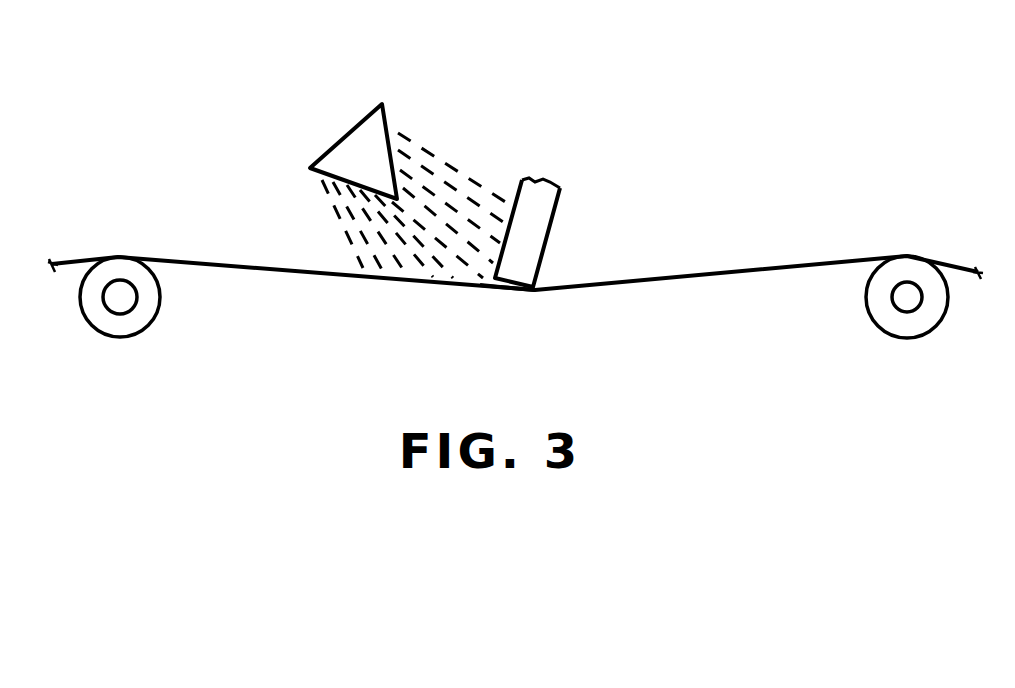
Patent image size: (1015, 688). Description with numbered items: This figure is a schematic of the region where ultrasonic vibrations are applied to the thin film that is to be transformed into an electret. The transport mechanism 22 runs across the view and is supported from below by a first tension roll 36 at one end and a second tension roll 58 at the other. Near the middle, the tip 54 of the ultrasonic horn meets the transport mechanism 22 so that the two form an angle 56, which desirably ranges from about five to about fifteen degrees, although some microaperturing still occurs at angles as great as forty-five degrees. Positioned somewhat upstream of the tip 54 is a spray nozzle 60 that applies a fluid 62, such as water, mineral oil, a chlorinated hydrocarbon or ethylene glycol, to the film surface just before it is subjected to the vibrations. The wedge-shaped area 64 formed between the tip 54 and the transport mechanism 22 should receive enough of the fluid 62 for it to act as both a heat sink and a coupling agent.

The transport mechanism 22 is at (168, 256).
The first tension roll 36 is at (152, 308).
The second tension roll 58 is at (947, 297).
The spray nozzle 60 is at (387, 112).
The fluid 62 is at (452, 165).
The tip of the ultrasonic horn 54 is at (552, 217).
The angle 56 is at (490, 285).
The wedge-shaped area 64 is at (505, 290).